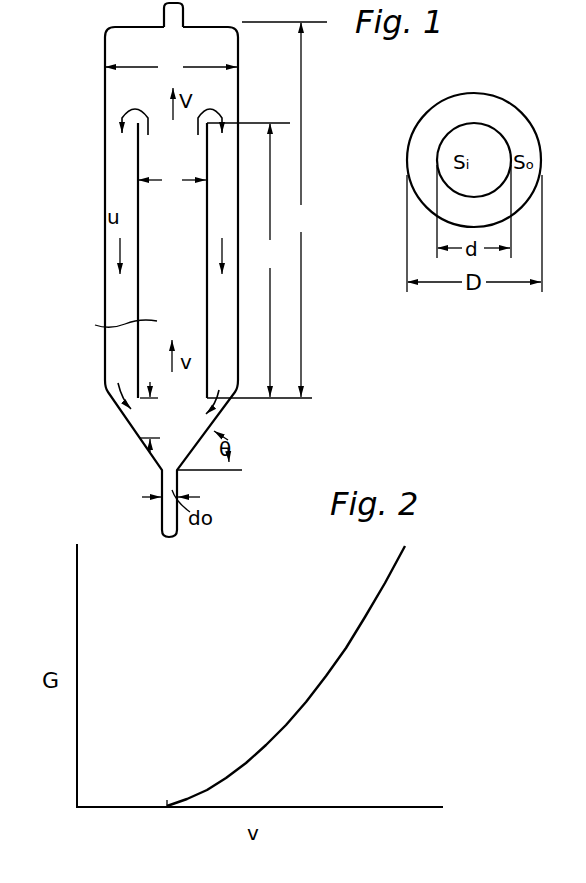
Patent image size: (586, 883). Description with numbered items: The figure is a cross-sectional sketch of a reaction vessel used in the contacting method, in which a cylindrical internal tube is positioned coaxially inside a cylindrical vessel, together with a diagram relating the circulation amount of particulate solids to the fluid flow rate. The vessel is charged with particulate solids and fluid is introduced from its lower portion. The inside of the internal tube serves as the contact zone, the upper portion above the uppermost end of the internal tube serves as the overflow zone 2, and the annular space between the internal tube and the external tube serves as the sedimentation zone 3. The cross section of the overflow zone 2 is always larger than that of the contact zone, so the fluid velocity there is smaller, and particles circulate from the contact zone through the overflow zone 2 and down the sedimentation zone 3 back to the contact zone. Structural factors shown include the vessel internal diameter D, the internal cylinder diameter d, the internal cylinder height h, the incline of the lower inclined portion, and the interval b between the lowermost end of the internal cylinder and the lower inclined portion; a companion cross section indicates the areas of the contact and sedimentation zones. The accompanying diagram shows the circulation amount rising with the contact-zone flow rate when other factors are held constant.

The overflow zone 2 is at (240, 90).
The sedimentation zone 3 is at (113, 283).
The internal diameter of the reaction vessel D is at (171, 68).
The diameter of the internal cylinder d is at (172, 181).
The vessel height H is at (284, 209).
The height of the internal cylinder h is at (259, 260).
The interval between the lowermost end and the lower inclined portion of the interna b is at (149, 417).